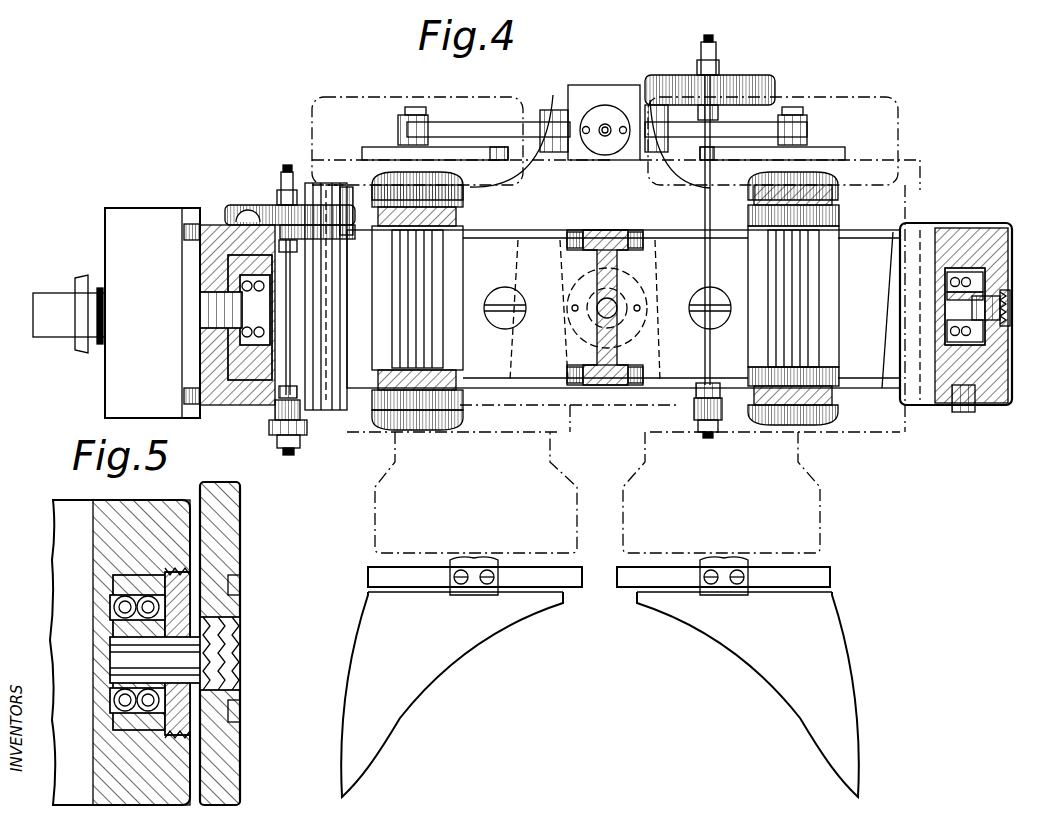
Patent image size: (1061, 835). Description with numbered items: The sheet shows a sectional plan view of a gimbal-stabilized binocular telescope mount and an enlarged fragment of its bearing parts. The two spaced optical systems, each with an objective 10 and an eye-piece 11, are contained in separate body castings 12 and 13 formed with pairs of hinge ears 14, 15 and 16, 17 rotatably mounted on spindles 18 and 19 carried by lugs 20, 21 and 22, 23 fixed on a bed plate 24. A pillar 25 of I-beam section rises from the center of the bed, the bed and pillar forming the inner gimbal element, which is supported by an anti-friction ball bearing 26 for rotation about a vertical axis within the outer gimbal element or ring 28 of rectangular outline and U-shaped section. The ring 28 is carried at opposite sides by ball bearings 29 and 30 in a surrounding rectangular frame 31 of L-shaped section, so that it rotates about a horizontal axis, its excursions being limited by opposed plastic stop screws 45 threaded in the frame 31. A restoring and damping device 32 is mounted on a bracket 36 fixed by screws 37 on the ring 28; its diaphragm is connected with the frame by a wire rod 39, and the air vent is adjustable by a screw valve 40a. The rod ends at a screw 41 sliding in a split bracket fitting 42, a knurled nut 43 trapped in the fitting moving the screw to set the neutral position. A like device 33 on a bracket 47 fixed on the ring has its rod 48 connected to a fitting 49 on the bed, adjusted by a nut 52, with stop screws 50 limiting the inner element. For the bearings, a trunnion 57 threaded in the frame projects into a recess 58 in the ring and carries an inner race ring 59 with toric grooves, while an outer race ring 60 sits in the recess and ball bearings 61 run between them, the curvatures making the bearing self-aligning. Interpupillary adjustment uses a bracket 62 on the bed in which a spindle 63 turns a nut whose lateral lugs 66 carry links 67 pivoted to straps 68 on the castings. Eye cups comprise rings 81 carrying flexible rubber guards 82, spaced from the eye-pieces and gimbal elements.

In FIG. 4, the objectives 10 is at (332, 97).
In FIG. 4, the eye-pieces 11 is at (376, 515).
In FIG. 4, the body casting 12 is at (890, 290).
In FIG. 4, the body casting 13 is at (330, 345).
In FIG. 4, the hinge ear 14 is at (835, 195).
In FIG. 4, the hinge ear 15 is at (835, 390).
In FIG. 4, the hinge ear 16 is at (458, 216).
In FIG. 4, the hinge ear 17 is at (458, 375).
In FIG. 4, the spindle 18 is at (812, 268).
In FIG. 4, the spindle 19 is at (440, 290).
In FIG. 4, the lug 20 is at (832, 372).
In FIG. 4, the lug 21 is at (462, 396).
In FIG. 4, the lug 22 is at (838, 215).
In FIG. 4, the lug 23 is at (462, 197).
In FIG. 4, the bed plate 24 is at (907, 426).
In FIG. 4, the pillar 25 is at (628, 282).
In FIG. 4, the anti-friction ball bearing 26 is at (642, 306).
In FIG. 4, the outer gimbal element 28 is at (252, 405).
In FIG. 5, the outer gimbal element 28 is at (180, 770).
In FIG. 4, the anti-friction ball bearing 29 is at (962, 262).
In FIG. 5, the anti-friction ball bearing 29 is at (122, 580).
In FIG. 4, the anti-friction ball bearing 30 is at (240, 352).
In FIG. 4, the frame 31 is at (206, 375).
In FIG. 5, the frame 31 is at (240, 530).
In FIG. 4, the restoring and damping device 32 is at (255, 205).
In FIG. 4, the restoring and damping device 33 is at (760, 75).
In FIG. 4, the bracket 36 is at (358, 200).
In FIG. 4, the screws 37 is at (236, 220).
In FIG. 4, the wire rod 39 is at (292, 270).
In FIG. 4, the screw valve 40a is at (287, 165).
In FIG. 4, the screw 41 is at (300, 452).
In FIG. 4, the split bracket fitting 42 is at (276, 420).
In FIG. 4, the knurled nut 43 is at (308, 428).
In FIG. 4, the stop screws 45 is at (975, 412).
In FIG. 4, the bracket 47 is at (780, 100).
In FIG. 4, the wire rod 48 is at (712, 362).
In FIG. 4, the split bracket fitting 49 is at (698, 405).
In FIG. 4, the stop screws 50 is at (460, 186).
In FIG. 4, the nut 52 is at (704, 430).
In FIG. 4, the trunnion 57 is at (1010, 268).
In FIG. 5, the trunnion 57 is at (240, 628).
In FIG. 4, the recess 58 is at (947, 328).
In FIG. 5, the recess 58 is at (112, 690).
In FIG. 4, the inner race ring 59 is at (972, 306).
In FIG. 5, the inner race ring 59 is at (118, 640).
In FIG. 4, the outer race ring 60 is at (947, 278).
In FIG. 5, the outer race ring 60 is at (122, 586).
In FIG. 4, the ball bearings 61 is at (947, 294).
In FIG. 5, the ball bearings 61 is at (115, 604).
In FIG. 4, the bracket 62 is at (602, 85).
In FIG. 4, the spindle 63 is at (605, 136).
In FIG. 4, the lateral lugs 66 is at (550, 100).
In FIG. 4, the link 67 is at (472, 128).
In FIG. 4, the strap 68 is at (378, 147).
In FIG. 4, the ring 81 is at (576, 590).
In FIG. 4, the flexible rubber guard 82 is at (408, 690).